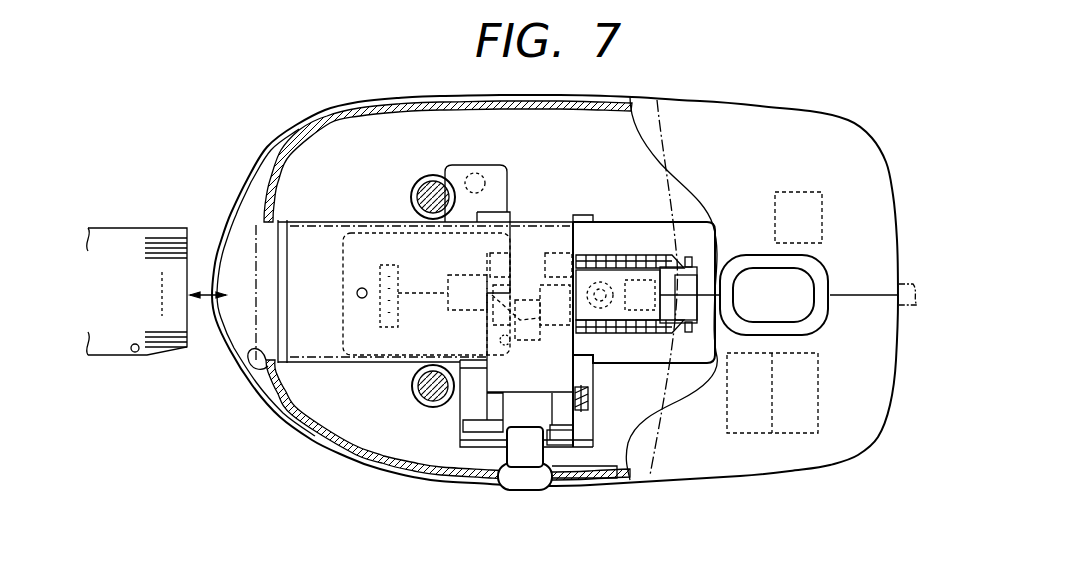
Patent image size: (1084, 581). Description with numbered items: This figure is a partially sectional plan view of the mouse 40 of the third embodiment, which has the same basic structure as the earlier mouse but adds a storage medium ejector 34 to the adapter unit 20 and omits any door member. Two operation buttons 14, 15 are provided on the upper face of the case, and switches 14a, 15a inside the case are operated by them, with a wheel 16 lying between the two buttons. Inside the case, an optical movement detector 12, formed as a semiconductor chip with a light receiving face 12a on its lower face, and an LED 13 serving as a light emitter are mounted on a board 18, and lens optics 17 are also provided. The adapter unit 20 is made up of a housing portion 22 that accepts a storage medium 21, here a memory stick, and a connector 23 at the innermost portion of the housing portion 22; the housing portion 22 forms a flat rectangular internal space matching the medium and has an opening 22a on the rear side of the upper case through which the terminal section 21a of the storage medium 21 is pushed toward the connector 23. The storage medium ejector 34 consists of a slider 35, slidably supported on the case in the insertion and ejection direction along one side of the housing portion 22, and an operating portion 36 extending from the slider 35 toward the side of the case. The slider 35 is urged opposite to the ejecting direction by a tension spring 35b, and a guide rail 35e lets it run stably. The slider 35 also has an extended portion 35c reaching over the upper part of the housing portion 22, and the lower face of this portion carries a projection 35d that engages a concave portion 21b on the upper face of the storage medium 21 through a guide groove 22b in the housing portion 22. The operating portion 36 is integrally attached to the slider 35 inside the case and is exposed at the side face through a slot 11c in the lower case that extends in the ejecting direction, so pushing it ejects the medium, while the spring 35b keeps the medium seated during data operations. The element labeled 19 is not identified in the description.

The mouse 40 is at (846, 104).
The operation button 14 is at (771, 117).
The switch 14a is at (806, 192).
The operation button 15 is at (842, 458).
The switch 15a is at (797, 433).
The wheel 16 is at (802, 288).
The connector 19 is at (907, 280).
The adapter unit 20 is at (322, 198).
The storage medium 21 is at (103, 229).
The terminal section 21a is at (165, 238).
The concave portion 21b is at (134, 355).
The housing portion 22 is at (316, 362).
The opening 22a is at (252, 352).
The guide groove 22b is at (482, 337).
The LED 13 is at (478, 282).
The connector 23 is at (540, 221).
The lens optics 17 is at (561, 260).
The optical movement detector 12 is at (674, 275).
The light receiving face 12a is at (617, 255).
The board 18 is at (628, 360).
The slider 35 is at (514, 413).
The tension spring 35b is at (583, 399).
The extended portion 35c is at (558, 462).
The projection 35d is at (562, 392).
The guide rail 35e is at (556, 444).
The operating portion 36 is at (528, 492).
The storage medium ejector 34 is at (443, 449).
The slot 11c is at (563, 484).